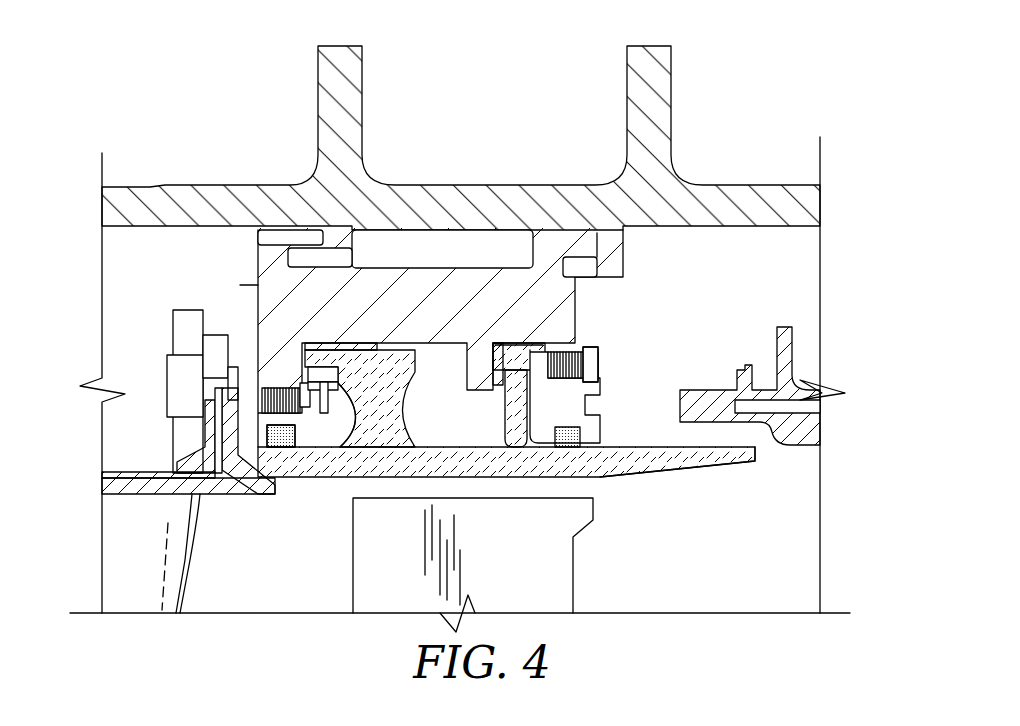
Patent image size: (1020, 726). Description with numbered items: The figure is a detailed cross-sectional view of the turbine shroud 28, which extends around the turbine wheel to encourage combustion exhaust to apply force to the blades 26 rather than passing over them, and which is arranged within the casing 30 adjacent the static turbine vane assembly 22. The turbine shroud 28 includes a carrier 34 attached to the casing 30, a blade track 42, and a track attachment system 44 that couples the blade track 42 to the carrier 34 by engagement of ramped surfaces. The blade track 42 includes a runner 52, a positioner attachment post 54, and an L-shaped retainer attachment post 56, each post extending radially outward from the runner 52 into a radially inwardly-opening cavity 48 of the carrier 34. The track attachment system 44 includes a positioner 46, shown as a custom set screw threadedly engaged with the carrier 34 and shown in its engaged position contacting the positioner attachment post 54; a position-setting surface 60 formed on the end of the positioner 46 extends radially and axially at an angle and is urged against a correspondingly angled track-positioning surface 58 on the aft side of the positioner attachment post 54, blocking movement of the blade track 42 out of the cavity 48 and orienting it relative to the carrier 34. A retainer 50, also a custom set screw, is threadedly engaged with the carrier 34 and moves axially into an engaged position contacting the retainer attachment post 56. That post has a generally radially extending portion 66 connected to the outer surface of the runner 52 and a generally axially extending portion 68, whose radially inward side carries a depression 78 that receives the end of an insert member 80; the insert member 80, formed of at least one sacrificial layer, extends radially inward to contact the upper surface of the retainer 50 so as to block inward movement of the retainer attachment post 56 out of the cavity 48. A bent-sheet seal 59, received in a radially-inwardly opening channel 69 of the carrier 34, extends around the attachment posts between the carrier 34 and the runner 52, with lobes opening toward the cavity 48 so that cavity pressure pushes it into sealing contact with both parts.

The static turbine vane assembly 22 is at (170, 580).
The blades 26 is at (545, 602).
The turbine shroud 28 is at (224, 288).
The casing 30 is at (783, 195).
The carrier 34 is at (428, 302).
The blade track 42 is at (692, 455).
The track attachment system 44 is at (642, 372).
The positioner 46 is at (584, 356).
The radially inwardly-opening cavity 48 is at (423, 356).
The retainer 50 is at (304, 391).
The runner 52 is at (614, 453).
The positioner attachment post 54 is at (517, 438).
The retainer attachment post 56 is at (371, 426).
The track-positioning surface 58 is at (533, 358).
The bent-sheet seal 59 is at (273, 452).
The position-setting surface 60 is at (598, 428).
The generally radially extending portion 66 is at (379, 402).
The generally axially extending portion 68 is at (341, 374).
The radially-inwardly opening channel 69 is at (286, 452).
The depression 78 is at (311, 370).
The insert member 80 is at (335, 400).